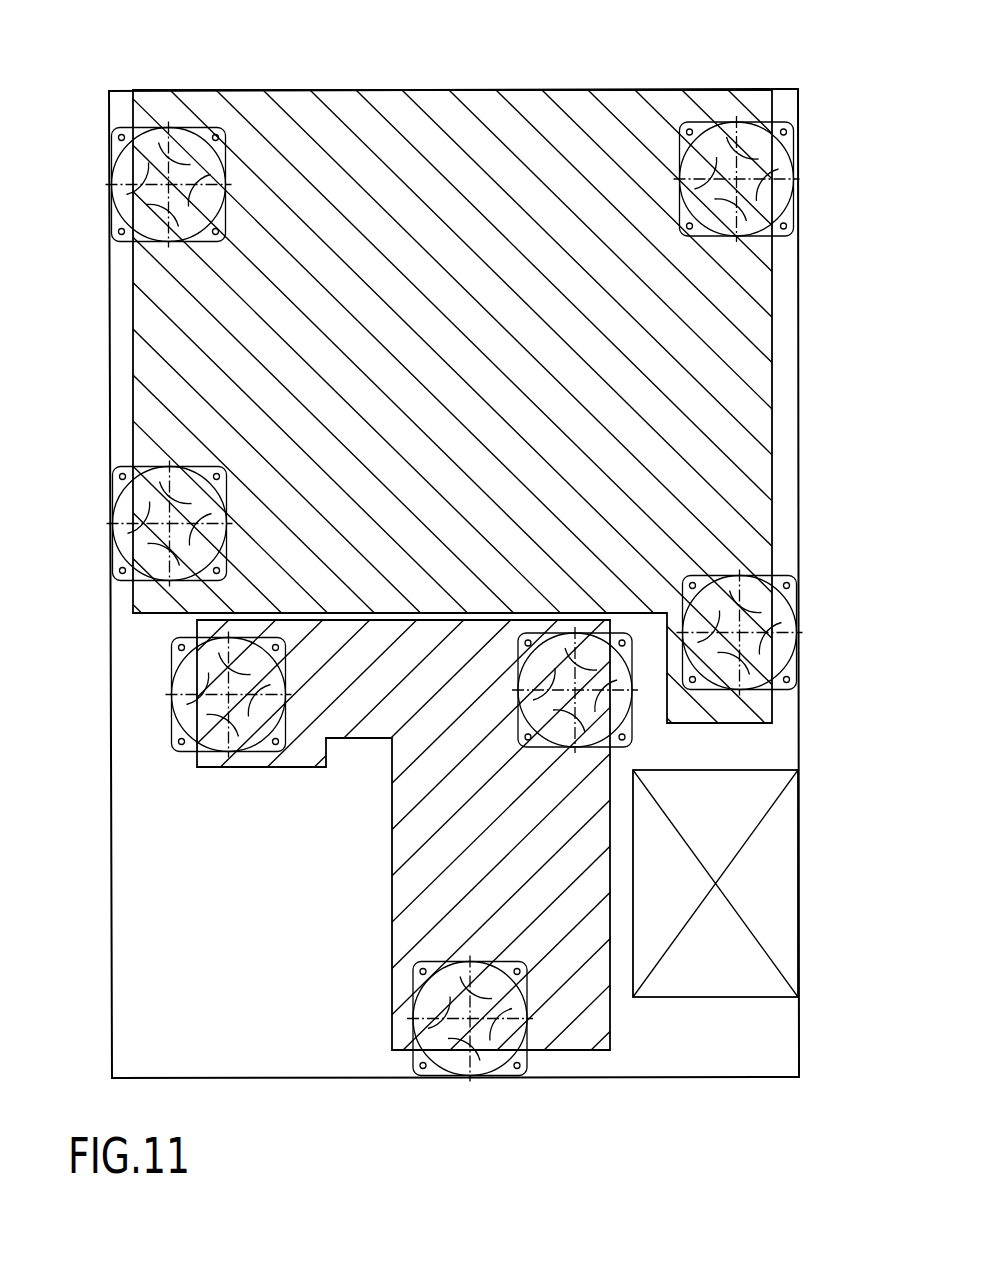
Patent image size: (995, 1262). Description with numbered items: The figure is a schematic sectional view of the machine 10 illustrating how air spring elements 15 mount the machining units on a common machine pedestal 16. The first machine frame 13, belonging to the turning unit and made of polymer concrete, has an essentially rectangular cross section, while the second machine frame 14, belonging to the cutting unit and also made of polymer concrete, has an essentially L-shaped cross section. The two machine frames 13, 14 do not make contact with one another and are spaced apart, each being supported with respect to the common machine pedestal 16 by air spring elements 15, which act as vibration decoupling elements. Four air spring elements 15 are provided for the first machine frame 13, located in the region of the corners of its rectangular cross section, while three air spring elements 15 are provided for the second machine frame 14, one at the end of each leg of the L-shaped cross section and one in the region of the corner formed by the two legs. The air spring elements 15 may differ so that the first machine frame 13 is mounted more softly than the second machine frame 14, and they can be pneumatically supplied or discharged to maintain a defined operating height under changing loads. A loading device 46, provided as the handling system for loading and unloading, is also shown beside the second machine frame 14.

The machine 10 is at (500, 70).
The first machine frame 13 is at (338, 107).
The second machine frame 14 is at (412, 832).
The air spring element 15 is at (122, 168).
The machine pedestal 16 is at (236, 917).
The loading device 46 is at (770, 862).